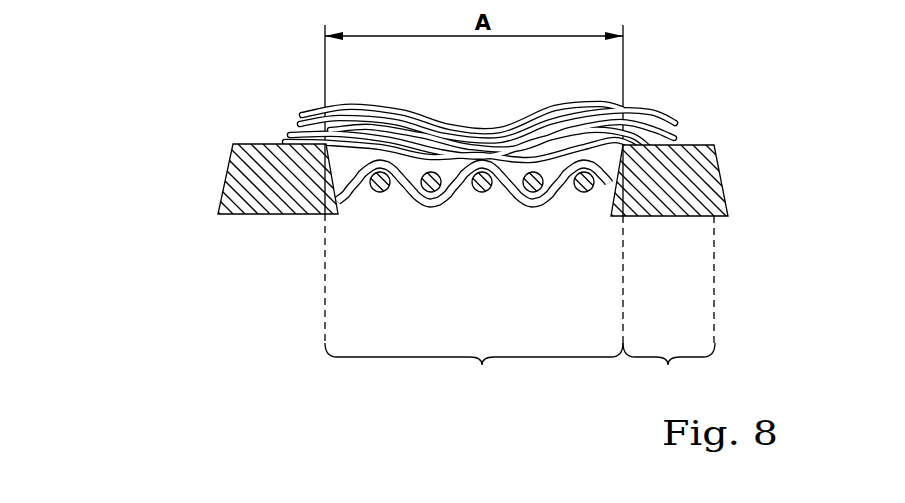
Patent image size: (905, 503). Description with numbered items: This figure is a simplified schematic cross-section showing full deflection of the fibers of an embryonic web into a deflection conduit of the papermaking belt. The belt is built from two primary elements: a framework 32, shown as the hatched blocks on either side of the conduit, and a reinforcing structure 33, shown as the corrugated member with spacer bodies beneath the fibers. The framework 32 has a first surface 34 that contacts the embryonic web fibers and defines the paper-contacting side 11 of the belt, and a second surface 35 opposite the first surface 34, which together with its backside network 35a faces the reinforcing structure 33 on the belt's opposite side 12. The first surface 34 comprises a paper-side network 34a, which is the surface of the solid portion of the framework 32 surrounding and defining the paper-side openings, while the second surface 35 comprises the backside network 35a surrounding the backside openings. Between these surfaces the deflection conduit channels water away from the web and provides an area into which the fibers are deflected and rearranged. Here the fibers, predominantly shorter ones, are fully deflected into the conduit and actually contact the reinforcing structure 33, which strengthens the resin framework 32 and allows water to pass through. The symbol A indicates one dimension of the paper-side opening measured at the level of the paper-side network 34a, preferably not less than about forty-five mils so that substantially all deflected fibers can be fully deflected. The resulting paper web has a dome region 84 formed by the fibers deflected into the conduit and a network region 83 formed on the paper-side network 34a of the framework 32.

The paper-contacting side 11 is at (384, 120).
The first surface 34 is at (384, 120).
The paper-side network 34a is at (252, 133).
The lower corrugated backing layer 12 is at (356, 249).
The second surface 35 is at (356, 249).
The backside network 35a is at (293, 250).
The framework 32 is at (257, 188).
The reinforcing structure 33 is at (488, 185).
The dome region 84 is at (474, 306).
The network region 83 is at (669, 309).